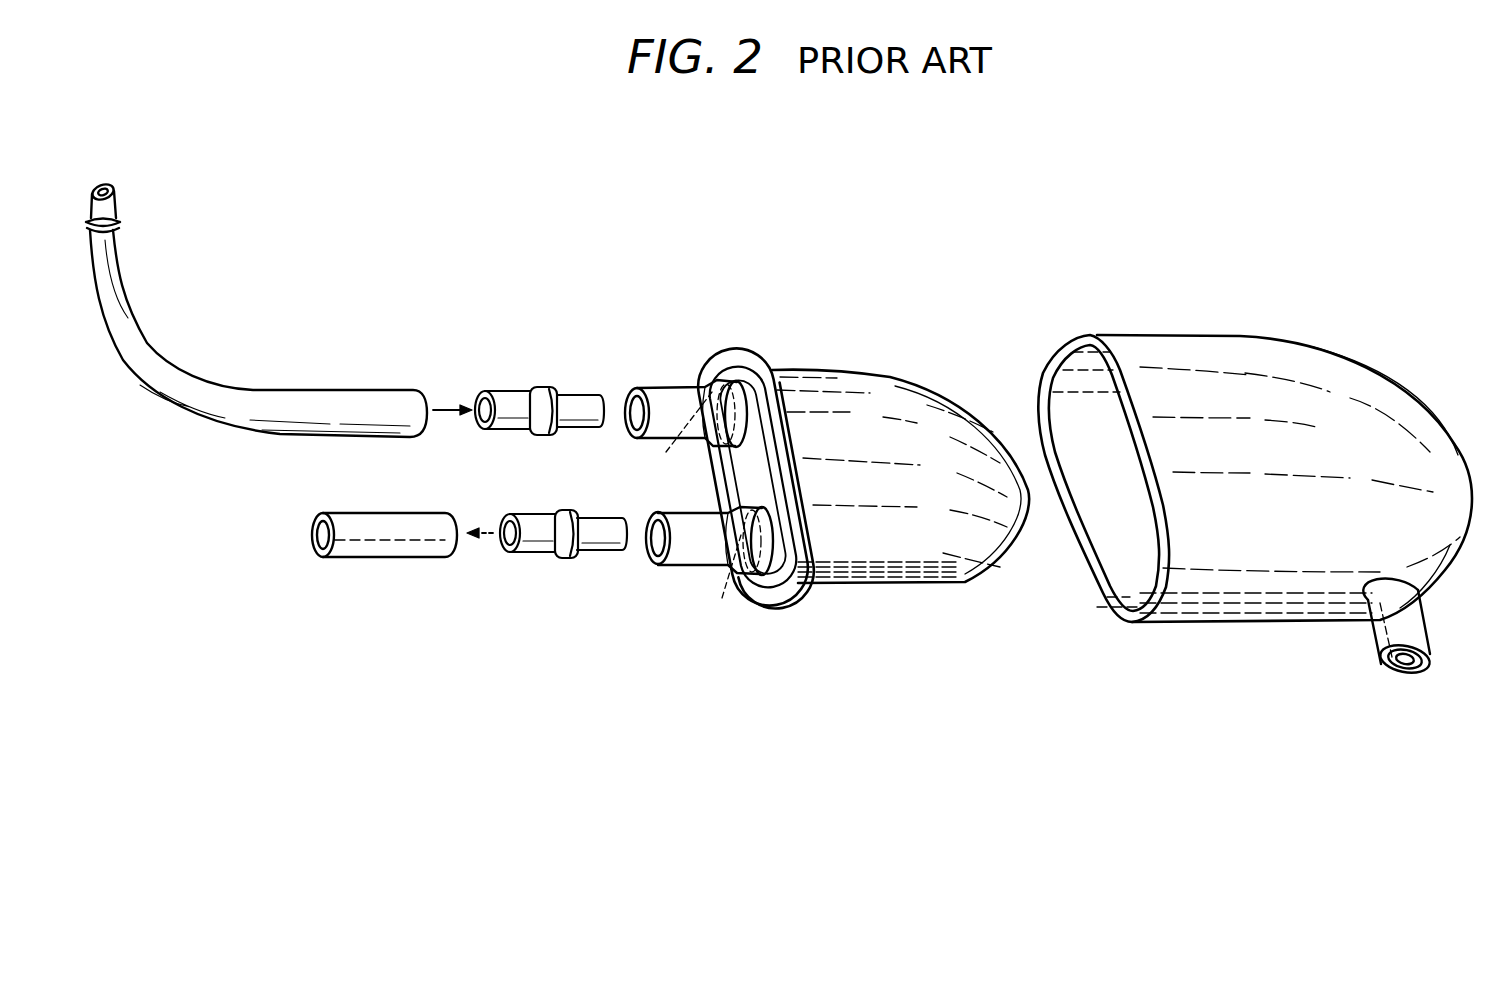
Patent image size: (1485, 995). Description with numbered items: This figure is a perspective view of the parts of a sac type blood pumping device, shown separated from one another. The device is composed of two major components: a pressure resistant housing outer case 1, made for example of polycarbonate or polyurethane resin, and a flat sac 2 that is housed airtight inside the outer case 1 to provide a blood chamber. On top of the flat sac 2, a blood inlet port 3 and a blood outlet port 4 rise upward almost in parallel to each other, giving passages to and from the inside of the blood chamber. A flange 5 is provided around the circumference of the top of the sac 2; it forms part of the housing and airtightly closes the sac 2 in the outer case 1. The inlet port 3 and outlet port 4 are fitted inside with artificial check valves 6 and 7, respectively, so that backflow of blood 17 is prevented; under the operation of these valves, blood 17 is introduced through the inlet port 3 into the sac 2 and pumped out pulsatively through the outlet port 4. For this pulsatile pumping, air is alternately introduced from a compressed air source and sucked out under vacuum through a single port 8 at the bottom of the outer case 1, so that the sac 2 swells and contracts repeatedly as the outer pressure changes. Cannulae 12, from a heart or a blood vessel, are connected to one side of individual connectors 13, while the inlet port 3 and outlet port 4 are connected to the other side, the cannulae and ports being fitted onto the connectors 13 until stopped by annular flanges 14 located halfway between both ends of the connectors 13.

The housing outer case 1 is at (1238, 605).
The flat sac 2 is at (895, 566).
The blood inlet port 3 is at (657, 386).
The blood outlet port 4 is at (690, 554).
The flange 5 is at (719, 360).
The artificial check valve 6 is at (681, 436).
The artificial check valve 7 is at (723, 579).
The single port 8 is at (1384, 624).
The cannula 12 is at (343, 402).
The connector 13 is at (512, 382).
The annular flange 14 is at (545, 386).
The blood 17 is at (441, 404).